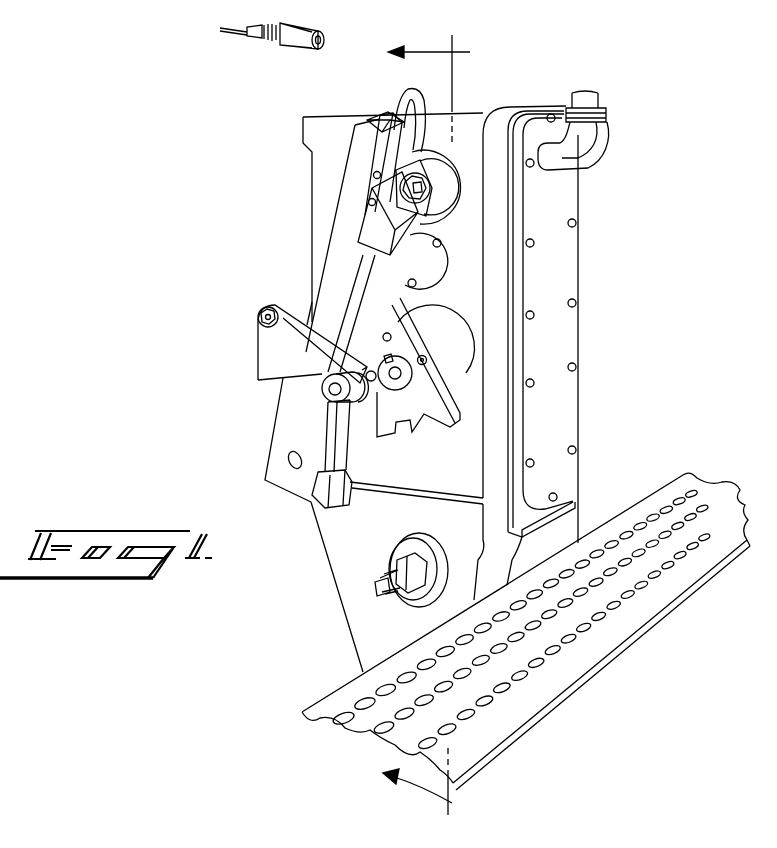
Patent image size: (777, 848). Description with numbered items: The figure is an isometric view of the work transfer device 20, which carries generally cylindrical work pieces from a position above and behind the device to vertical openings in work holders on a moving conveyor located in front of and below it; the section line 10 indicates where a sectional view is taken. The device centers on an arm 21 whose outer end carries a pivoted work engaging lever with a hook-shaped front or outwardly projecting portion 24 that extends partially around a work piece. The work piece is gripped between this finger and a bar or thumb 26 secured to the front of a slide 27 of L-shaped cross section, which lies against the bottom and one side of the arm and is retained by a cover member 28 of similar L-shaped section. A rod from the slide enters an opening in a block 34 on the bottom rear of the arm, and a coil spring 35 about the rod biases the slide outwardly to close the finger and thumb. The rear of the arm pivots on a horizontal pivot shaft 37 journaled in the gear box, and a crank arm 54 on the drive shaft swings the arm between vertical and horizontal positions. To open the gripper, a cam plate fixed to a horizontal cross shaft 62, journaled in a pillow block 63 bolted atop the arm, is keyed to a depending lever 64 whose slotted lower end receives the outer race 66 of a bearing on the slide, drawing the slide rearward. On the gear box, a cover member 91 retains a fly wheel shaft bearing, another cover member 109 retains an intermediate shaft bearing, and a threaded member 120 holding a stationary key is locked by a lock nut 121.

The section line 10 is at (423, 418).
The work transfer device 20 is at (590, 261).
The arm 21 is at (330, 208).
The front or outwardly projecting portion 24 is at (425, 135).
The bar or thumb 26 is at (367, 126).
The slide 27 is at (405, 240).
The cover member 28 is at (359, 305).
The block 34 is at (322, 508).
The coil spring 35 is at (352, 475).
The horizontal pivot shaft 37 is at (310, 500).
The crank arm 54 is at (432, 432).
The horizontal cross shaft 62 is at (258, 323).
The pillow block 63 is at (312, 302).
The depending lever 64 is at (262, 358).
The outer race 66 is at (322, 392).
The cover member 91 is at (452, 190).
The cover member 109 is at (412, 290).
The threaded member 120 is at (380, 588).
The lock nut 121 is at (387, 561).